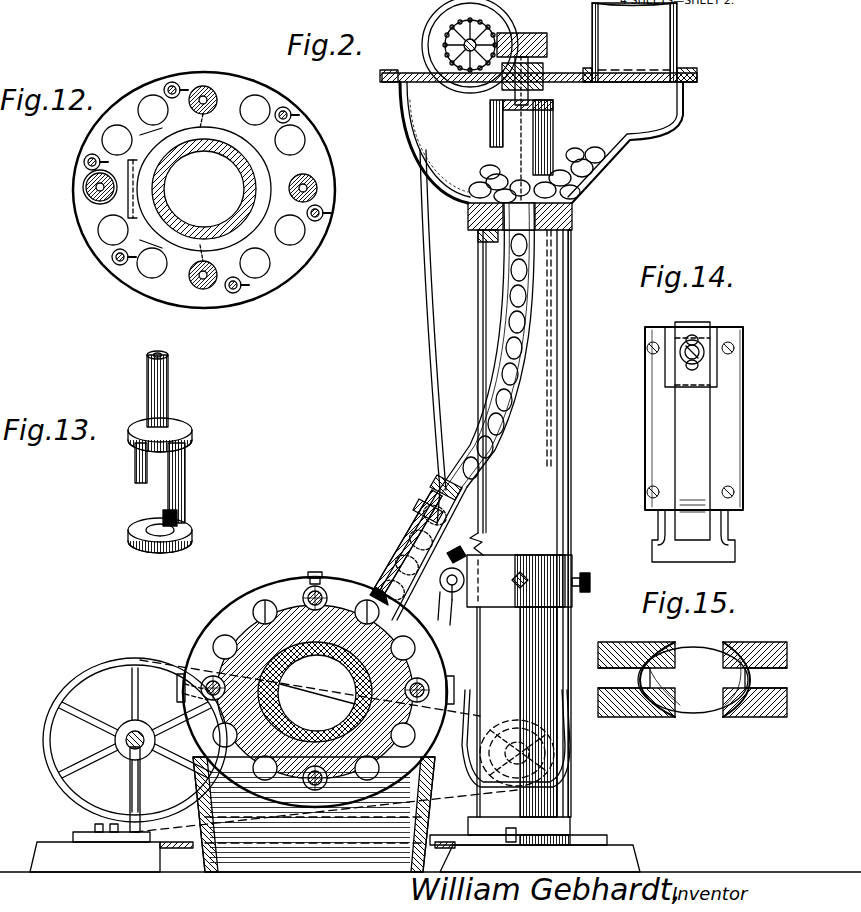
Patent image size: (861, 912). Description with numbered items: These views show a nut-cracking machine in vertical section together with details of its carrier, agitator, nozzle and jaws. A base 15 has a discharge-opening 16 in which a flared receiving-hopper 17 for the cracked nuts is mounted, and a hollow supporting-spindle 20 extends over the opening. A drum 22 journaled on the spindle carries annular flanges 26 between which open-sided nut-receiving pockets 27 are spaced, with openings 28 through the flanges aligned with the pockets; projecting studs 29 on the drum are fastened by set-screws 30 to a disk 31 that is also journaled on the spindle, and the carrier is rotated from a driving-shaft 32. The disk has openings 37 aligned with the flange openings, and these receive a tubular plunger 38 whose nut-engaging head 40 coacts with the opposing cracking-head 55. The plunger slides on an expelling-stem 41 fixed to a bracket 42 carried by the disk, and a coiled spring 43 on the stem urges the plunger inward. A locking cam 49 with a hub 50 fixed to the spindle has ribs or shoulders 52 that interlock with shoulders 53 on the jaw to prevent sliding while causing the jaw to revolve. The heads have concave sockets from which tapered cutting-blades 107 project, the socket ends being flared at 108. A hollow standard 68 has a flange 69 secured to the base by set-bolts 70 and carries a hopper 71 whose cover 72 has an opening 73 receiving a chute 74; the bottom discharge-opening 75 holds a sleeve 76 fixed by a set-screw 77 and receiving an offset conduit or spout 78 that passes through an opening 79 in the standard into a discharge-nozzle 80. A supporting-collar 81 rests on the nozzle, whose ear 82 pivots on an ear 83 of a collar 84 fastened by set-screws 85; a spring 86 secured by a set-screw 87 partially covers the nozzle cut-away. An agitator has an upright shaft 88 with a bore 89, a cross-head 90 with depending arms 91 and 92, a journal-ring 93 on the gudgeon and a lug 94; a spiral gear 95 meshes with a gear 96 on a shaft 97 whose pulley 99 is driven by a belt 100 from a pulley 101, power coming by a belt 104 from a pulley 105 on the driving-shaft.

In FIG. 2, the base 15 is at (142, 872).
In FIG. 2, the discharge-opening 16 is at (197, 874).
In FIG. 2, the receiving-hopper 17 is at (345, 875).
In FIG. 2, the supporting-spindle 20 is at (312, 702).
In FIG. 12, the supporting-spindle 20 is at (182, 178).
In FIG. 2, the drum 22 is at (215, 672).
In FIG. 2, the annular outstanding flanges 26 is at (218, 640).
In FIG. 2, the nut-receiving pockets 27 is at (290, 608).
In FIG. 2, the openings 28 is at (255, 640).
In FIG. 12, the projecting studs 29 is at (172, 84).
In FIG. 12, the set-screws 30 is at (180, 88).
In FIG. 12, the disk 31 is at (86, 228).
In FIG. 2, the driving-shaft 32 is at (115, 741).
In FIG. 12, the openings 37 is at (138, 112).
In FIG. 12, the tubular plunger 38 is at (210, 96).
In FIG. 2, the nut-engaging head 40 is at (315, 588).
In FIG. 15, the nut-engaging head 40 is at (610, 648).
In FIG. 12, the expelling-stem 41 is at (200, 104).
In FIG. 2, the bracket 42 is at (316, 572).
In FIG. 12, the coiled spring 43 is at (213, 276).
In FIG. 12, the cam 49 is at (196, 189).
In FIG. 12, the hub 50 is at (267, 178).
In FIG. 12, the ribs or shoulders 52 is at (110, 200).
In FIG. 12, the shoulders 53 is at (83, 187).
In FIG. 15, the cracking-head 55 is at (776, 648).
In FIG. 2, the hollow standard 68 is at (524, 523).
In FIG. 2, the flange 69 is at (598, 838).
In FIG. 2, the set-bolts 70 is at (508, 832).
In FIG. 2, the hopper 71 is at (597, 183).
In FIG. 2, the cover 72 is at (690, 76).
In FIG. 2, the opening 73 is at (697, 78).
In FIG. 2, the chute 74 is at (634, 42).
In FIG. 2, the central discharge-opening 75 is at (575, 222).
In FIG. 2, the sleeve 76 is at (480, 236).
In FIG. 2, the set-screw 77 is at (563, 245).
In FIG. 2, the conduit or spout 78 is at (508, 413).
In FIG. 2, the opening 79 is at (484, 494).
In FIG. 2, the discharge-nozzle 80 is at (438, 598).
In FIG. 14, the discharge-nozzle 80 is at (735, 464).
In FIG. 2, the supporting-collar 81 is at (442, 500).
In FIG. 2, the ear 82 is at (462, 560).
In FIG. 2, the ear 83 is at (466, 592).
In FIG. 2, the collar 84 is at (572, 565).
In FIG. 2, the set-screws 85 is at (514, 580).
In FIG. 2, the spring 86 is at (395, 578).
In FIG. 14, the spring 86 is at (692, 431).
In FIG. 2, the set-screw 87 is at (413, 515).
In FIG. 14, the set-screw 87 is at (700, 345).
In FIG. 2, the upright shaft 88 is at (530, 95).
In FIG. 13, the upright shaft 88 is at (170, 397).
In FIG. 2, the bore 89 is at (524, 110).
In FIG. 13, the bore 89 is at (162, 352).
In FIG. 13, the cross-head 90 is at (192, 430).
In FIG. 2, the depending arm 91 is at (492, 130).
In FIG. 13, the depending arm 91 is at (137, 480).
In FIG. 2, the depending arm 92 is at (553, 140).
In FIG. 13, the depending arm 92 is at (186, 486).
In FIG. 13, the journal-ring 93 is at (160, 553).
In FIG. 13, the lug 94 is at (178, 516).
In FIG. 2, the spiral gear 95 is at (548, 44).
In FIG. 2, the spiral gear 96 is at (492, 34).
In FIG. 2, the shaft 97 is at (445, 24).
In FIG. 2, the pulley 99 is at (440, 70).
In FIG. 2, the belt 100 is at (437, 312).
In FIG. 2, the pulley 101 is at (573, 757).
In FIG. 2, the belt 104 is at (196, 822).
In FIG. 2, the pulley 105 is at (66, 688).
In FIG. 15, the cutting-blades 107 is at (657, 655).
In FIG. 15, the flared outer ends 108 is at (703, 718).